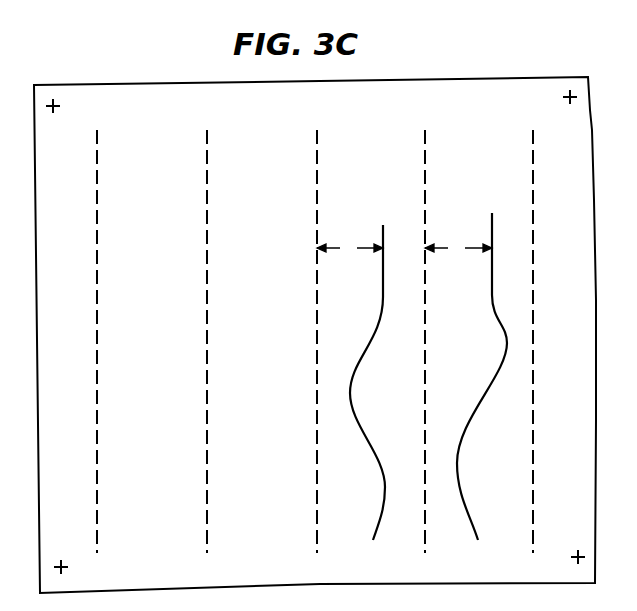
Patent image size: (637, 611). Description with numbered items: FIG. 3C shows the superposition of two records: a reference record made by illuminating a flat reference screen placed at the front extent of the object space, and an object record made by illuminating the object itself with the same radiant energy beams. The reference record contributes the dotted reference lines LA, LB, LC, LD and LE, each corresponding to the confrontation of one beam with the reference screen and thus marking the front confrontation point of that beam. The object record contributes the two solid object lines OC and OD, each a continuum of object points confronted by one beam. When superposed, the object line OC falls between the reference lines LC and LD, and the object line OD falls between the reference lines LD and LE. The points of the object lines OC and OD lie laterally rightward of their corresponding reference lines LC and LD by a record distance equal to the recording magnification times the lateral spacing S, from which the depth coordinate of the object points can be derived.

The reference line LA is at (100, 533).
The reference line LB is at (209, 533).
The reference line LC is at (319, 533).
The reference line LD is at (427, 533).
The reference line LE is at (535, 530).
The object line OC is at (384, 505).
The object line OD is at (470, 505).
The lateral spacing S is at (404, 249).